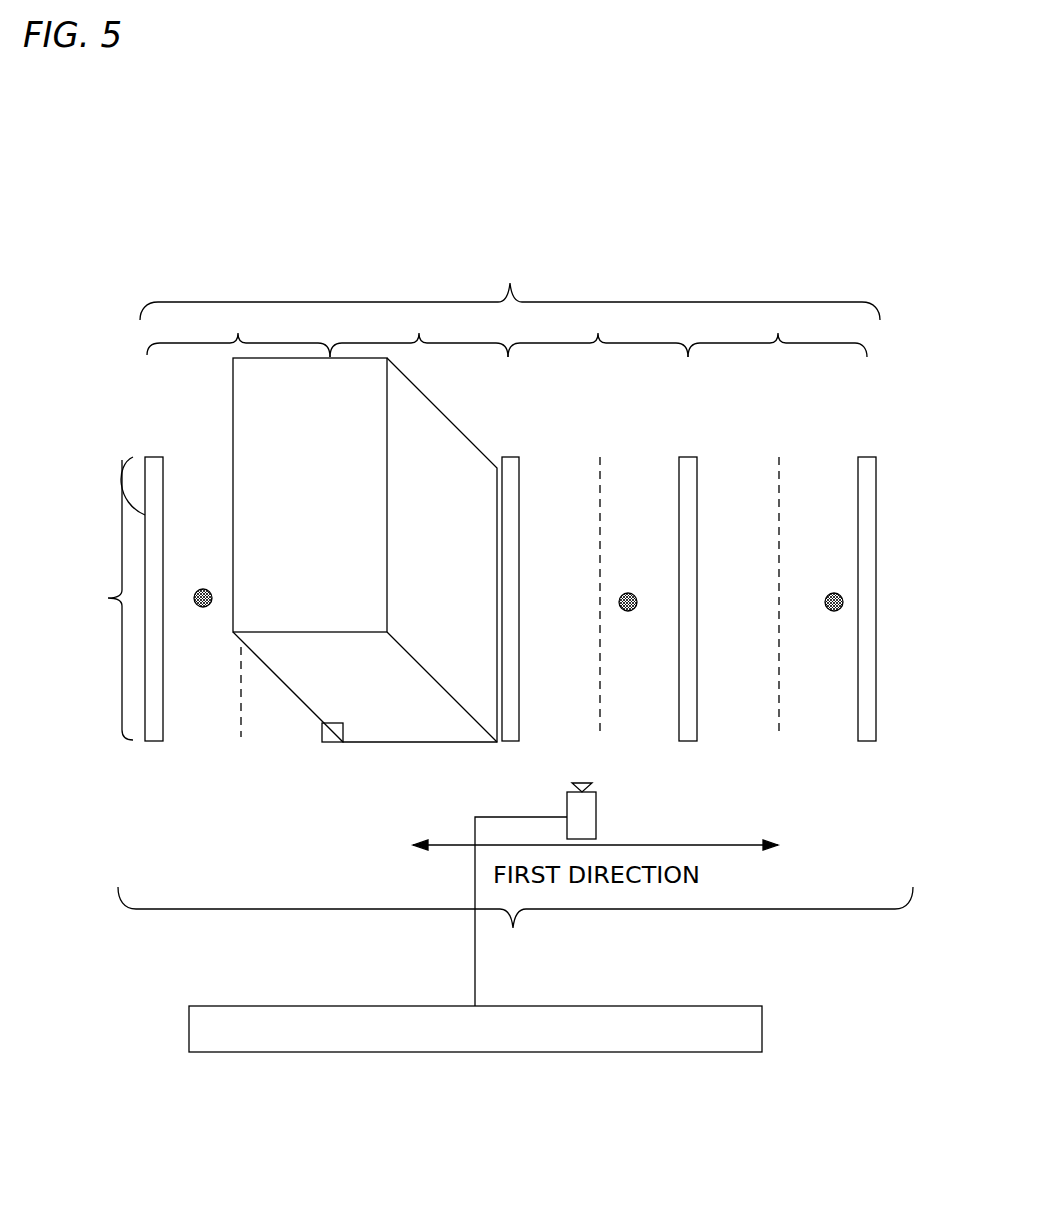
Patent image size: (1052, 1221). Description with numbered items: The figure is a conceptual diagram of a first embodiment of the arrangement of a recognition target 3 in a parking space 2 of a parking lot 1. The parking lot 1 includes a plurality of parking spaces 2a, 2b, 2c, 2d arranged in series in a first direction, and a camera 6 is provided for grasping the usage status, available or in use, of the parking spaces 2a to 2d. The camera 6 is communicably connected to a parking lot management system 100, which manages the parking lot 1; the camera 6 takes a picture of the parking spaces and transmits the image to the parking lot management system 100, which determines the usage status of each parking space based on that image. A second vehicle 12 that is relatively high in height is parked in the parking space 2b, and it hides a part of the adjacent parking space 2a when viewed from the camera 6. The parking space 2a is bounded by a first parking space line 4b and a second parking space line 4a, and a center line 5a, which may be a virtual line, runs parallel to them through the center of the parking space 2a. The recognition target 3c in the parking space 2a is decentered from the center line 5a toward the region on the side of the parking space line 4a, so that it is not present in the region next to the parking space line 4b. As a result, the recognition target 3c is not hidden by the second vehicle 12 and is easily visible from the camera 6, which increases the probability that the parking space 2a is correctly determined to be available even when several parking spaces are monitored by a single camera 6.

The parking lot 1 is at (515, 925).
The parking spaces 2 is at (510, 288).
The parking space 2a is at (200, 522).
The parking space 2b is at (419, 331).
The parking space 2c is at (598, 331).
The parking space 2d is at (777, 331).
The recognition target 3 is at (828, 612).
The recognition target 3c is at (196, 592).
The parking space line 4a is at (122, 460).
The parking space line 4b is at (322, 733).
The center line 5a is at (241, 712).
The camera 6 is at (596, 827).
The second vehicle 12 is at (287, 687).
The parking lot management system 100 is at (244, 1006).